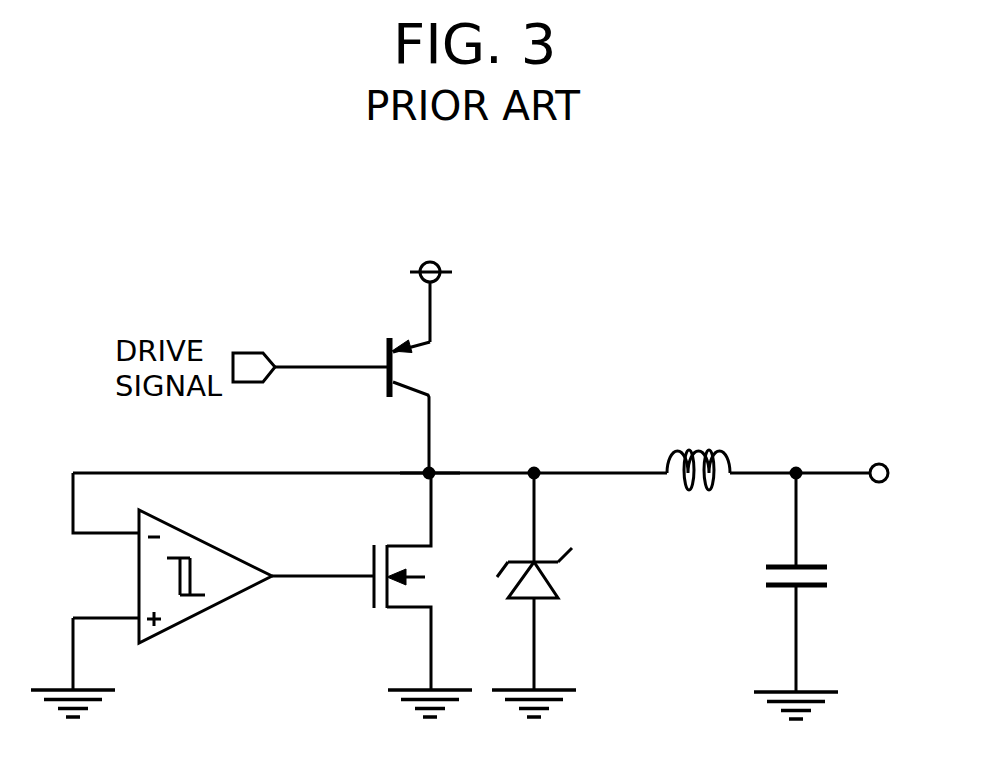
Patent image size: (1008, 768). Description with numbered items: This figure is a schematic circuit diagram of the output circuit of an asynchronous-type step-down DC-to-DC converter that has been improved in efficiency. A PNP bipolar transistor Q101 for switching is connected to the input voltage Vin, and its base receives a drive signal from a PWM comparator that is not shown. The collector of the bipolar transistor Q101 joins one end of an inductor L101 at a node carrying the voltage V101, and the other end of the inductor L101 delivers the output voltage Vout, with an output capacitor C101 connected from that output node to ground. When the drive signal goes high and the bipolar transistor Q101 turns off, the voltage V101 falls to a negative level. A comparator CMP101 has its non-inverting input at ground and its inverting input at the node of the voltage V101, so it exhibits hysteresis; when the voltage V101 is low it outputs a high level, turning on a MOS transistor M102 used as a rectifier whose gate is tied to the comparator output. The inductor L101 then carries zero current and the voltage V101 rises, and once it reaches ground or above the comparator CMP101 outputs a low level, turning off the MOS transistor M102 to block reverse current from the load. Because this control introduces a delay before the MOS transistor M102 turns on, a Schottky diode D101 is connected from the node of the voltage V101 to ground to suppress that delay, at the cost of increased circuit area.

The bipolar transistor Q101 is at (386, 386).
The MOS transistor M102 is at (386, 581).
The comparator CMP101 is at (217, 607).
The Schottky diode D101 is at (561, 581).
The inductor L101 is at (703, 450).
The output capacitor C101 is at (757, 582).
The voltage V101 is at (432, 470).
The input voltage Vin is at (432, 283).
The output voltage Vout is at (880, 455).